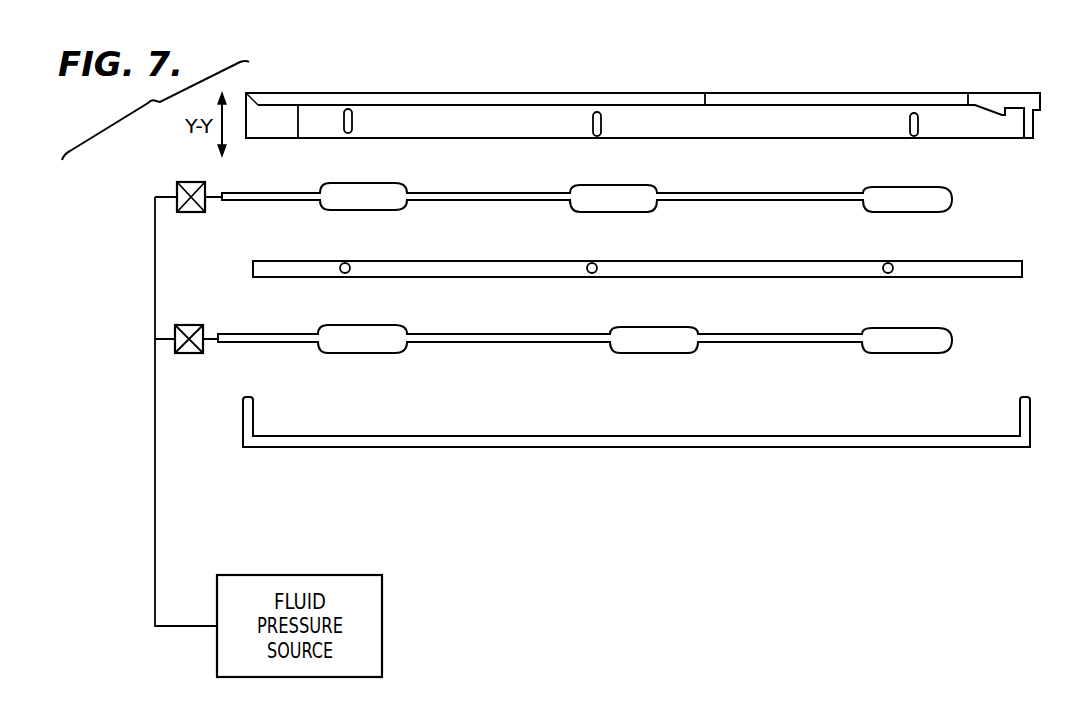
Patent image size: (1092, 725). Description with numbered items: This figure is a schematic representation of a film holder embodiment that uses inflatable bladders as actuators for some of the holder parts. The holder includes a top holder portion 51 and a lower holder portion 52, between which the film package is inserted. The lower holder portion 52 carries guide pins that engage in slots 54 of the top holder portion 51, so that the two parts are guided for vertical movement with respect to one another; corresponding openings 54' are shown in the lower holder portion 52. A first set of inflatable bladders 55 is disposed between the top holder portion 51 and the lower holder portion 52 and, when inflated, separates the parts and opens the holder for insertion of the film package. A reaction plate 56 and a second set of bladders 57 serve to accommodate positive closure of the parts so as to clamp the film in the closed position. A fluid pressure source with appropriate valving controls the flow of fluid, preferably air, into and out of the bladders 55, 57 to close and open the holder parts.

The top holder portion 51 is at (1040, 94).
The lower holder portion 52 is at (978, 261).
The slots 54 is at (647, 95).
The holes in bar 52 54' is at (639, 249).
The first set of inflatable bladders 55 is at (373, 183).
The reaction plate 56 is at (597, 447).
The second set of bladders 57 is at (393, 325).